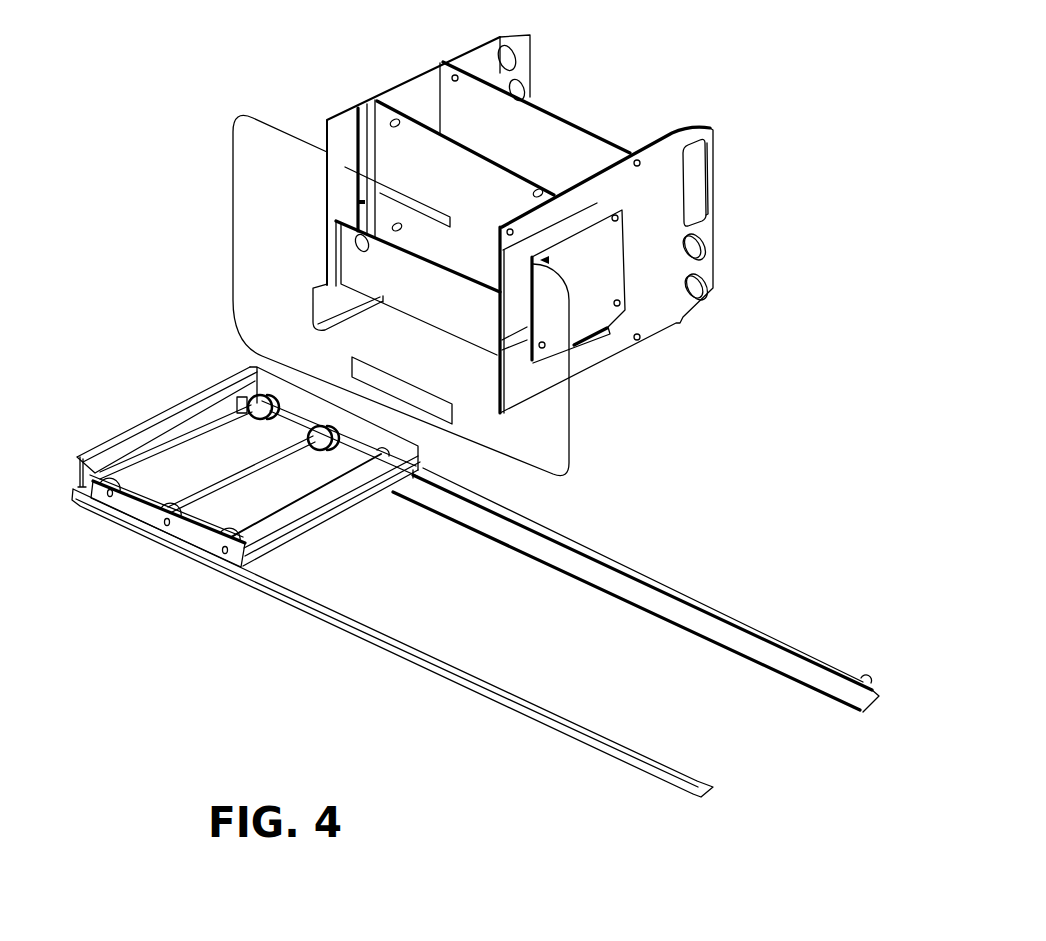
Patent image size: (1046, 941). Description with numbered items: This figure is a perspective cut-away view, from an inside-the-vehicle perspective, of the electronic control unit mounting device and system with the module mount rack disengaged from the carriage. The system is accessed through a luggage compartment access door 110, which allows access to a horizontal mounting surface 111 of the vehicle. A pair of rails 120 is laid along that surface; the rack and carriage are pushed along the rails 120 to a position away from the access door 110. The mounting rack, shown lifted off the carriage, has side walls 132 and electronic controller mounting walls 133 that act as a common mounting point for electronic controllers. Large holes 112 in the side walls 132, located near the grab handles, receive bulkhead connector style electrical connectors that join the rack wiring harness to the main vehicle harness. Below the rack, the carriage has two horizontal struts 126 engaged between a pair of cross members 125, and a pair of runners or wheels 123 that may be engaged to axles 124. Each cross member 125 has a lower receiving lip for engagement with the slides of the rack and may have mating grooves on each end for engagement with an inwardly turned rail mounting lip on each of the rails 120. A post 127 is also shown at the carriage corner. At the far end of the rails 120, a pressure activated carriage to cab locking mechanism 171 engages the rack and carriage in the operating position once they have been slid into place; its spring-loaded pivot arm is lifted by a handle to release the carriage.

The luggage compartment access door 110 is at (575, 453).
The horizontal mounting surface 111 is at (568, 631).
The large holes 112 is at (718, 298).
The rails 120 is at (441, 683).
The runners or wheels 123 is at (267, 389).
The axles 124 is at (271, 483).
The cross members 125 is at (147, 415).
The horizontal struts 126 is at (203, 541).
The post 127 is at (73, 449).
The side walls 132 is at (339, 110).
The mounting walls 133 is at (576, 118).
The carriage to cab locking mechanism 171 is at (869, 675).